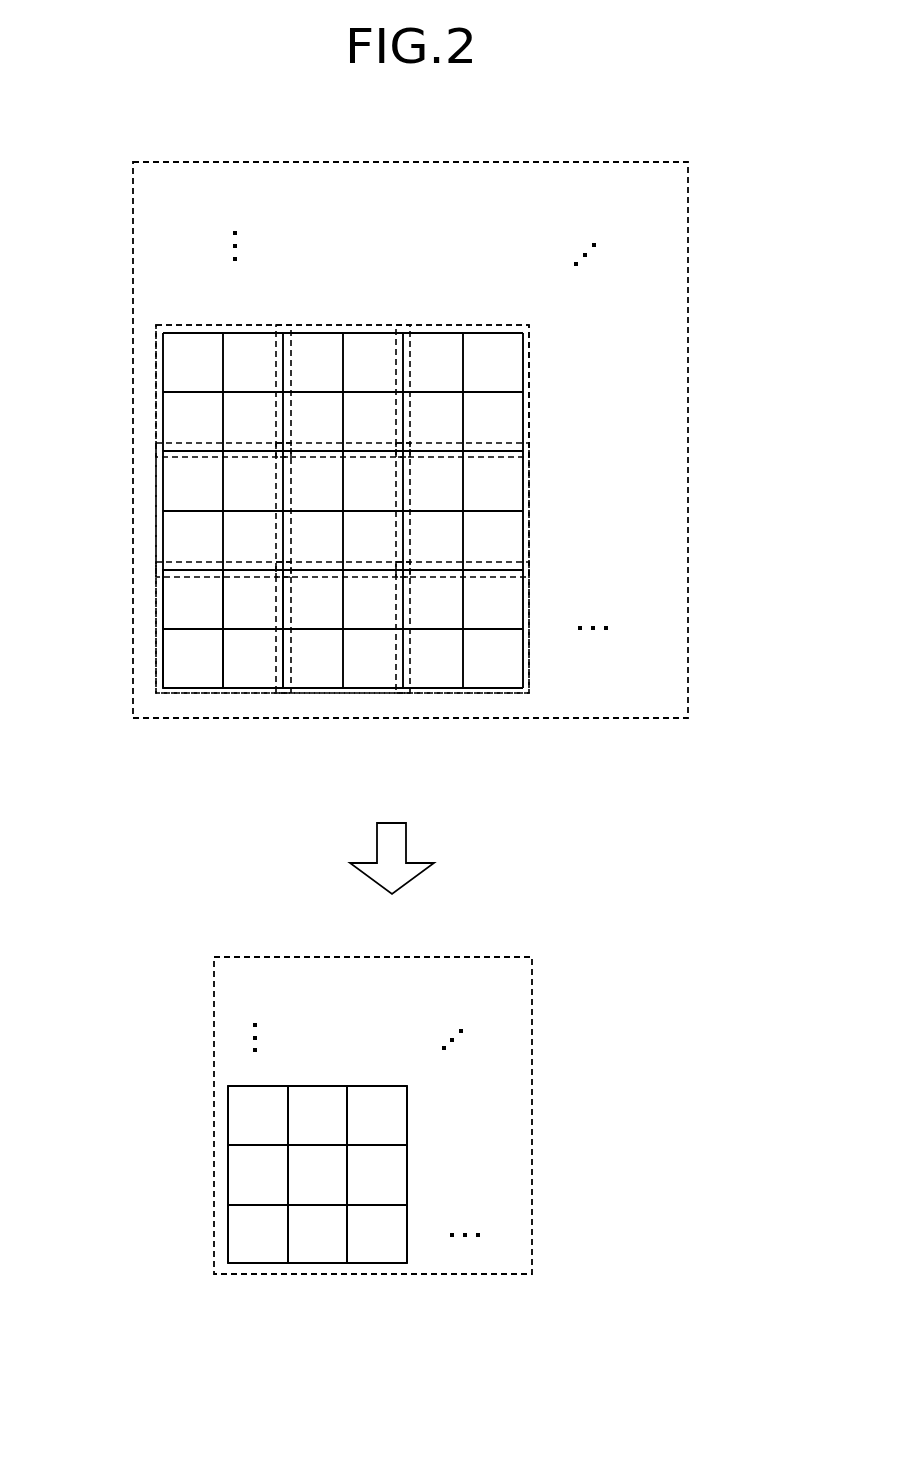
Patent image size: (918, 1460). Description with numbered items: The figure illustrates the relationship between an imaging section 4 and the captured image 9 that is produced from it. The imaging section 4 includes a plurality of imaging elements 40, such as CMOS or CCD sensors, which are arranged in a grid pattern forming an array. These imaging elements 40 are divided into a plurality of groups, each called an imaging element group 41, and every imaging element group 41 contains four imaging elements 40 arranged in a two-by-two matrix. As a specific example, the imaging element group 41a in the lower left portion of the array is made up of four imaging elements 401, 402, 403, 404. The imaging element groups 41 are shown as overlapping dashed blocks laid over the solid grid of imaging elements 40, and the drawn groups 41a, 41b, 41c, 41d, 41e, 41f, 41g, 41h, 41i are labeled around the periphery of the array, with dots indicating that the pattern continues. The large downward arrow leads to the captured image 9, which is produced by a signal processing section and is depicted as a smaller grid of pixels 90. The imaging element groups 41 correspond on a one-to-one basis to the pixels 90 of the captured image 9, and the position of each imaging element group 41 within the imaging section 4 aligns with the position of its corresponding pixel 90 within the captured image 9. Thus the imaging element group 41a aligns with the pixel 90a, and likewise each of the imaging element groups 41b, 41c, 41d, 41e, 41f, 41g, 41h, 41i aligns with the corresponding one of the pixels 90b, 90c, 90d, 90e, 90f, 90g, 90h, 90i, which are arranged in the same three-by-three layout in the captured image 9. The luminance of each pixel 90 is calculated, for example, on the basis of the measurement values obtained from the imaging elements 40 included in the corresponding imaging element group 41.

The imaging section 4 is at (410, 162).
The imaging element 40 is at (207, 737).
The imaging element 401 is at (193, 657).
The imaging element 402 is at (250, 657).
The imaging element 403 is at (253, 588).
The imaging element 404 is at (193, 604).
The imaging element group 41 is at (531, 694).
The imaging element group 41a is at (156, 632).
The imaging element group 41b is at (345, 695).
The imaging element group 41c is at (472, 695).
The imaging element group 41d is at (156, 513).
The imaging element group 41e is at (383, 482).
The imaging element group 41f is at (530, 537).
The imaging element group 41g is at (156, 396).
The imaging element group 41h is at (340, 325).
The imaging element group 41i is at (530, 390).
The captured image 9 is at (503, 957).
The pixel 90 is at (211, 1290).
The pixel 90a is at (268, 1247).
The pixel 90b is at (335, 1247).
The pixel 90c is at (388, 1247).
The pixel 90d is at (240, 1158).
The pixel 90e is at (305, 1195).
The pixel 90f is at (383, 1176).
The pixel 90g is at (240, 1095).
The pixel 90h is at (305, 1131).
The pixel 90i is at (383, 1113).